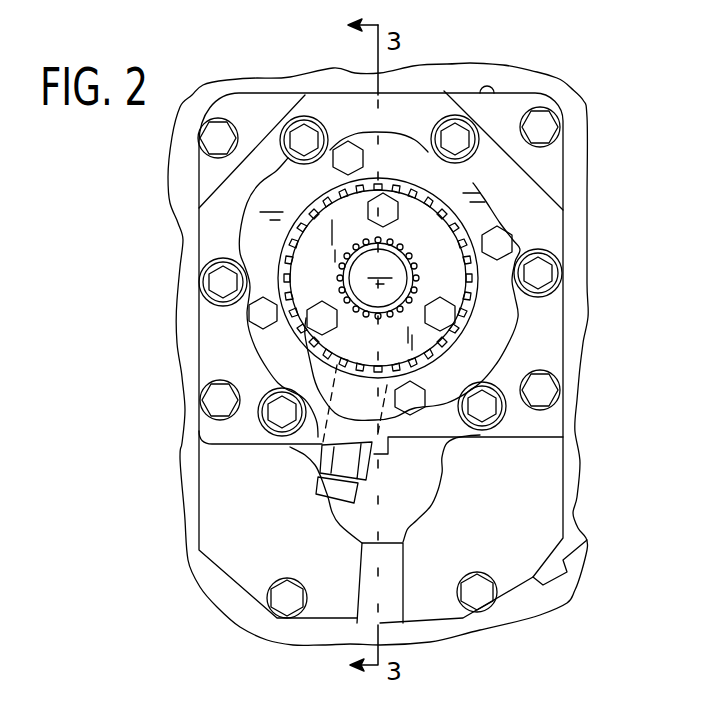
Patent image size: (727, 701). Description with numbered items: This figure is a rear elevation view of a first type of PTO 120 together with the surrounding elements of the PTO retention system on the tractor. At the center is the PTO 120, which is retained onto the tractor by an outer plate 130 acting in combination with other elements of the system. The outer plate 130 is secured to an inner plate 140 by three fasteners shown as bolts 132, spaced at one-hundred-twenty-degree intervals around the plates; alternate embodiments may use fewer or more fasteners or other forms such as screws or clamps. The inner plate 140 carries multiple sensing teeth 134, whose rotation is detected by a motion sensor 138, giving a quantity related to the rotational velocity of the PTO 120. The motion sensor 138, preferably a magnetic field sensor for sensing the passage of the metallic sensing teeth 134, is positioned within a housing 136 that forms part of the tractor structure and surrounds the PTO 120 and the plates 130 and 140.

The PTO 120 is at (400, 270).
The outer plate 130 is at (420, 205).
The bolts 132 is at (385, 207).
The sensing teeth 134 is at (292, 245).
The housing 136 is at (277, 347).
The motion sensor 138 is at (317, 493).
The inner plate 140 is at (305, 187).